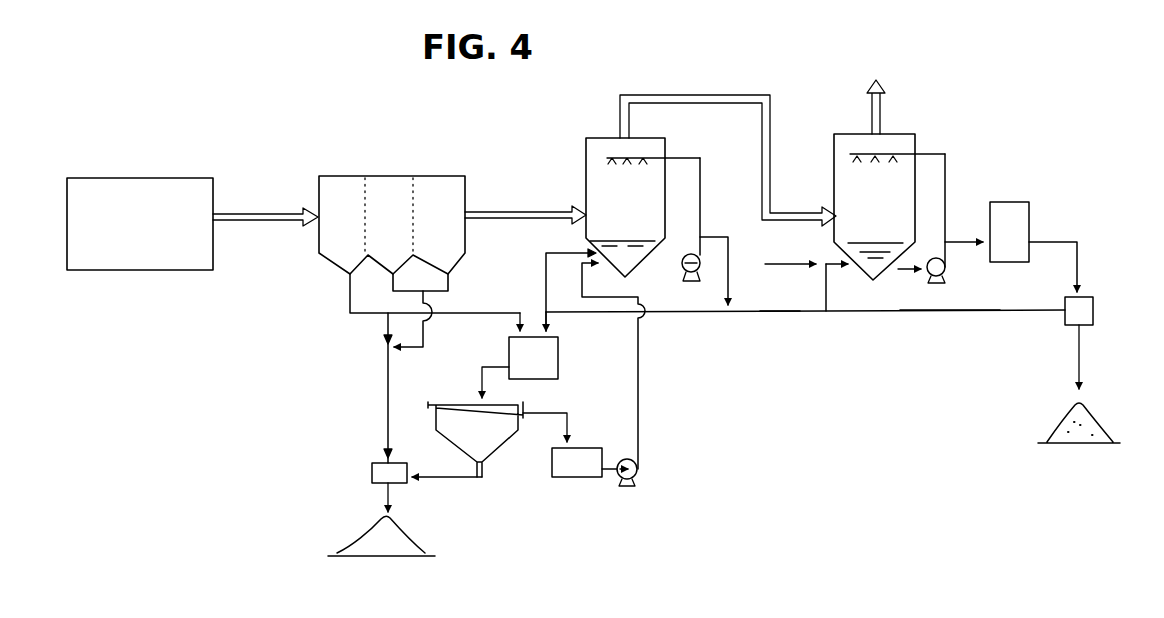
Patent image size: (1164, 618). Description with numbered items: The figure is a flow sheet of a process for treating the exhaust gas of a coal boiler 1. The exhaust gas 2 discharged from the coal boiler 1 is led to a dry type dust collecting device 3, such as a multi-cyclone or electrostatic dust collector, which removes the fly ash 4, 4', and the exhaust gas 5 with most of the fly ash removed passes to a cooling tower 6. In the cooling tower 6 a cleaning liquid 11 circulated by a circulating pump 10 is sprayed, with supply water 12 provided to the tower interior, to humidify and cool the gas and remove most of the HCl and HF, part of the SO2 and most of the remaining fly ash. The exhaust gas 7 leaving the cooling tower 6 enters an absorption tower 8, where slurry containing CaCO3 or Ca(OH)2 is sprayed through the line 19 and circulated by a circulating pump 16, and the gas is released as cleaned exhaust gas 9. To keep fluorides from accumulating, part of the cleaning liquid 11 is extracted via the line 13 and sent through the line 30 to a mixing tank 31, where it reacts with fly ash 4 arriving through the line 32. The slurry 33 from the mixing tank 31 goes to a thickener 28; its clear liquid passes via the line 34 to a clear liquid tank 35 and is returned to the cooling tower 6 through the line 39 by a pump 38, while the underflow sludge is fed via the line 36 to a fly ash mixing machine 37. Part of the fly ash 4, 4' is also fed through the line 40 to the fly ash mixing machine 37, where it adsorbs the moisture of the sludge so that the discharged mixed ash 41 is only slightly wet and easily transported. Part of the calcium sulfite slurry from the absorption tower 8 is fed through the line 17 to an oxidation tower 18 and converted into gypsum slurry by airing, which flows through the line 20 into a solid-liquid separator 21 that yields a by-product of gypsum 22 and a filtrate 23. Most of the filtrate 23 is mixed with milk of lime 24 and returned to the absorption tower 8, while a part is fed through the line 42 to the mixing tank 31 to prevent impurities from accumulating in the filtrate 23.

The coal boiler 1 is at (190, 177).
The exhaust gas 2 is at (248, 212).
The dry type dust collecting device 3 is at (413, 175).
The fly ash 4 is at (426, 310).
The fly ash 4' is at (428, 319).
The exhaust gas 5 is at (503, 211).
The cooling tower 6 is at (597, 133).
The exhaust gas 7 is at (682, 95).
The absorption tower 8 is at (917, 135).
The cleaned exhaust gas 9 is at (880, 112).
The circulating pump 10 is at (697, 282).
The cleaning liquid 11 is at (680, 241).
The supply water 12 is at (549, 268).
The pipe line 13 is at (728, 253).
The circulating pump 16 is at (945, 278).
The pipe line 17 is at (908, 286).
The oxidation tower 18 is at (1020, 202).
The pipe line 19 is at (943, 183).
The pipe line 20 is at (1083, 258).
The solid-liquid separator 21 is at (1093, 300).
The by-product of gypsum 22 is at (1100, 420).
The filtrate 23 is at (995, 337).
The milk of lime 24 is at (773, 268).
The thickener 28 is at (498, 448).
The pipe line 30 is at (688, 313).
The mixing tank 31 is at (558, 360).
The pipe line 32 is at (463, 320).
The slurry 33 is at (483, 363).
The pipe line 34 is at (567, 412).
The clear liquid tank 35 is at (598, 443).
The pipe line 36 is at (448, 478).
The fly ash mixing machine 37 is at (372, 490).
The pump 38 is at (654, 472).
The pipe line 39 is at (640, 380).
The pipe line 40 is at (377, 387).
The mixed ash 41 is at (412, 543).
The pipe line 42 is at (773, 315).